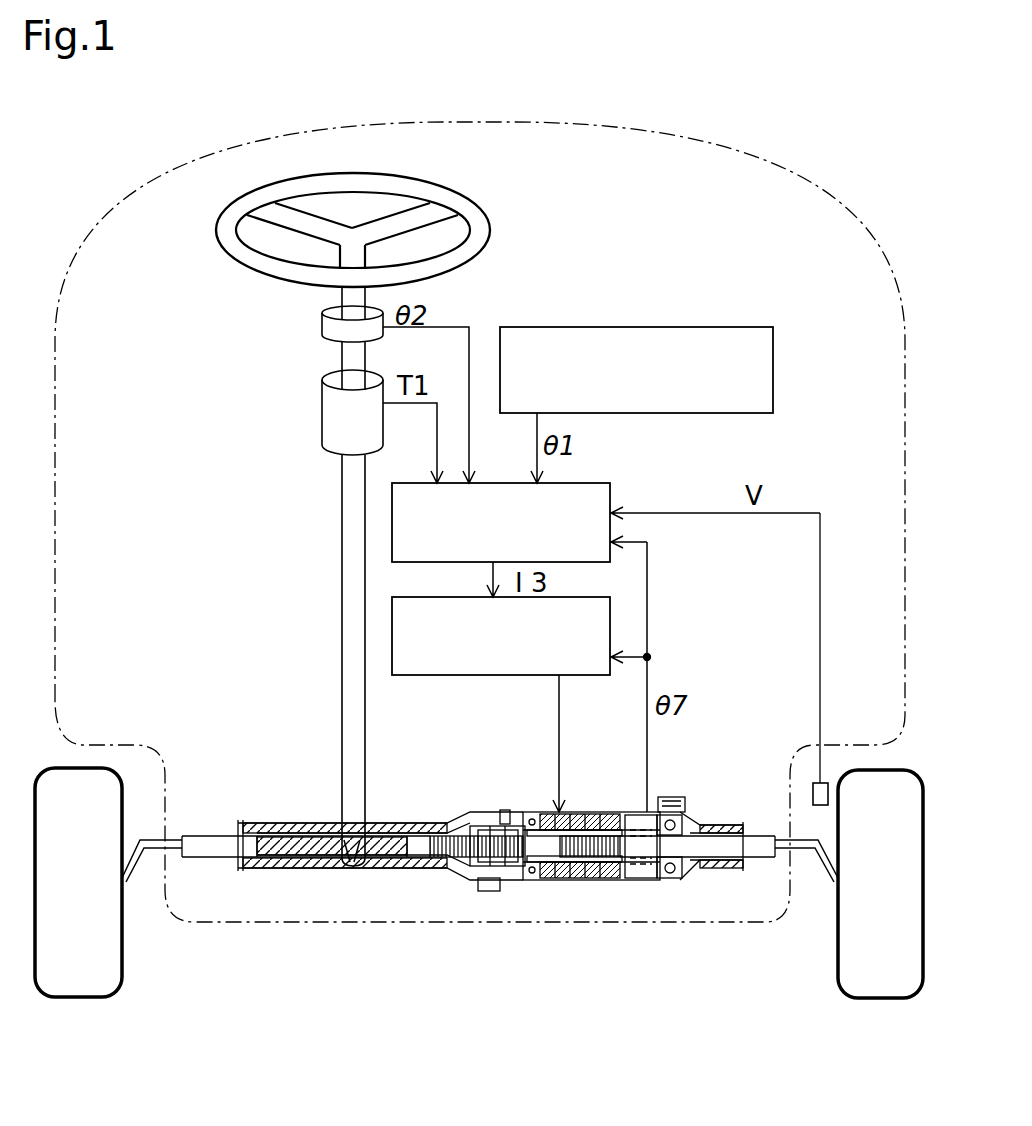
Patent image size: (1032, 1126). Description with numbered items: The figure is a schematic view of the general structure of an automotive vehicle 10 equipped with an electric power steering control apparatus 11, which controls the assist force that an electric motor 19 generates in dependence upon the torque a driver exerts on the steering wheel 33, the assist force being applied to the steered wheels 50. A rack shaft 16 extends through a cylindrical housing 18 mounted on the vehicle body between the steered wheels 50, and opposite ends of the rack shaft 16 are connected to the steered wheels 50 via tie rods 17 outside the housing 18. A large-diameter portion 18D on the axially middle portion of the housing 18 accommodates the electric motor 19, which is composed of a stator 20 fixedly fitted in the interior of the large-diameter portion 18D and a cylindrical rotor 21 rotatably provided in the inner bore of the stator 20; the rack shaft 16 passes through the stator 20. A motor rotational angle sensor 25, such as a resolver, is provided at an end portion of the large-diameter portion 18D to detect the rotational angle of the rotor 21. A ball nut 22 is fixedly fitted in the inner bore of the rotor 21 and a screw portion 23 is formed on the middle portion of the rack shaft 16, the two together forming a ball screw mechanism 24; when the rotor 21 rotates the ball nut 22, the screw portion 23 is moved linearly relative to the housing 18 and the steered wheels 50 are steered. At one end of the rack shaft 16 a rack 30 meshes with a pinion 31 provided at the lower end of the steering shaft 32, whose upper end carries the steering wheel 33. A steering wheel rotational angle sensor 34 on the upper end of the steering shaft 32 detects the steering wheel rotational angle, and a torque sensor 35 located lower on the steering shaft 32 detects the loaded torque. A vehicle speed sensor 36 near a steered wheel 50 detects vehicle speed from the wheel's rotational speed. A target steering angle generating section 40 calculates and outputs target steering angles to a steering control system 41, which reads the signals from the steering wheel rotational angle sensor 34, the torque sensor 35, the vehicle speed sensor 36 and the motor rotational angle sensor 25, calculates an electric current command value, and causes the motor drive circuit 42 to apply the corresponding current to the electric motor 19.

The automotive vehicle 10 is at (758, 165).
The steering control apparatus 11 is at (213, 465).
The rack shaft 16 is at (420, 862).
The tie rod 17 is at (155, 845).
The housing 18 is at (743, 880).
The large-diameter portion 18D is at (650, 882).
The electric motor 19 is at (577, 930).
The stator 20 is at (575, 880).
The rotor 21 is at (605, 880).
The ball nut 22 is at (520, 880).
The screw portion 23 is at (463, 880).
The ball screw mechanism 24 is at (525, 926).
The motor rotational angle sensor 25 is at (645, 880).
The rack 30 is at (305, 860).
The pinion 31 is at (357, 862).
The steering shaft 32 is at (366, 735).
The steering wheel 33 is at (483, 222).
The steering wheel rotational angle sensor 34 is at (327, 333).
The torque sensor 35 is at (330, 423).
The vehicle speed sensor 36 is at (818, 795).
The target steering angle generating section 40 is at (773, 355).
The steering control system 41 is at (612, 495).
The motor drive circuit 42 is at (487, 677).
The steered wheel 50 is at (80, 980).